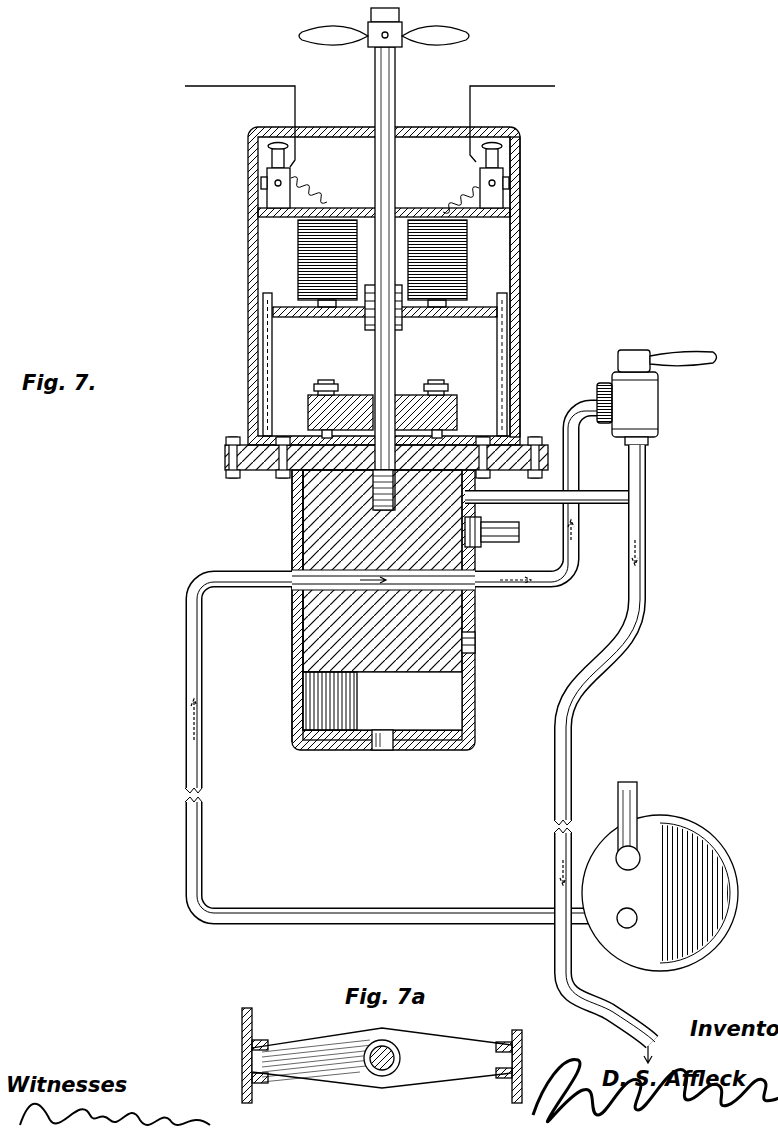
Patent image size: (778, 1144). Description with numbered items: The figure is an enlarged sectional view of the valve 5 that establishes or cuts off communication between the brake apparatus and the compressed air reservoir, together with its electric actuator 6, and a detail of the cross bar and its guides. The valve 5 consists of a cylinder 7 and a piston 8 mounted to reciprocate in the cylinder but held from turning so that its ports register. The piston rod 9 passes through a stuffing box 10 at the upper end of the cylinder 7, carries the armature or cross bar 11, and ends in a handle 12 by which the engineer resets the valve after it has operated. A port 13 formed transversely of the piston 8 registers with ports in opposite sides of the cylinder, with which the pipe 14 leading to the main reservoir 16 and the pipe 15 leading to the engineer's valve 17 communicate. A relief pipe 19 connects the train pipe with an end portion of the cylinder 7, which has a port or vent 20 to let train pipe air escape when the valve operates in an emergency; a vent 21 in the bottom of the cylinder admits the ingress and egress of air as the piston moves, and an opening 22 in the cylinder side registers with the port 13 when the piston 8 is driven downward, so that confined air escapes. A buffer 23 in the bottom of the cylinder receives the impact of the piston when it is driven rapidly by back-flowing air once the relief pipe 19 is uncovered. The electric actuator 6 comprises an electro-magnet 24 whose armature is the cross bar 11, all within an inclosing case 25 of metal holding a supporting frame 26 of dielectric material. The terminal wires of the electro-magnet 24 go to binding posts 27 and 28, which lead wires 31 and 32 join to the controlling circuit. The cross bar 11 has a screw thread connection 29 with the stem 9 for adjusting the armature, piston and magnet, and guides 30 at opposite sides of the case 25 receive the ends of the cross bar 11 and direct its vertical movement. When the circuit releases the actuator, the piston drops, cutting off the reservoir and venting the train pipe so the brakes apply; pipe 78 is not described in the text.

In FIG. 7, the valve 5 is at (362, 610).
In FIG. 7, the electric actuator 6 is at (367, 286).
In FIG. 7, the cylinder 7 is at (292, 710).
In FIG. 7, the piston 8 is at (412, 668).
In FIG. 7, the piston rod 9 is at (395, 352).
In FIG. 7A, the piston rod 9 is at (380, 1070).
In FIG. 7, the stuffing box 10 is at (402, 397).
In FIG. 7, the armature 11 is at (316, 311).
In FIG. 7A, the armature 11 is at (328, 1085).
In FIG. 7, the handle 12 is at (447, 47).
In FIG. 7, the port 13 is at (404, 588).
In FIG. 7, the pipe 14 is at (185, 708).
In FIG. 7, the pipe 15 is at (557, 586).
In FIG. 7, the main reservoir 16 is at (725, 860).
In FIG. 7, the engineer's valve 17 is at (658, 417).
In FIG. 7, the relief pipe 19 is at (600, 502).
In FIG. 7, the port or vent 20 is at (501, 545).
In FIG. 7, the vent 21 is at (381, 750).
In FIG. 7, the opening 22 is at (484, 634).
In FIG. 7, the buffer 23 is at (453, 737).
In FIG. 7, the electro-magnet 24 is at (298, 270).
In FIG. 7, the inclosing case 25 is at (515, 210).
In FIG. 7A, the inclosing case 25 is at (247, 1008).
In FIG. 7, the supporting frame 26 is at (520, 280).
In FIG. 7, the binding post 27 is at (276, 162).
In FIG. 7, the binding post 28 is at (505, 172).
In FIG. 7, the screw thread connection 29 is at (365, 322).
In FIG. 7, the guides 30 is at (272, 350).
In FIG. 7A, the guides 30 is at (257, 1083).
In FIG. 7, the lead wire 31 is at (240, 114).
In FIG. 7, the lead wire 32 is at (513, 112).
In FIG. 7, the discharge pipe 78 is at (640, 632).